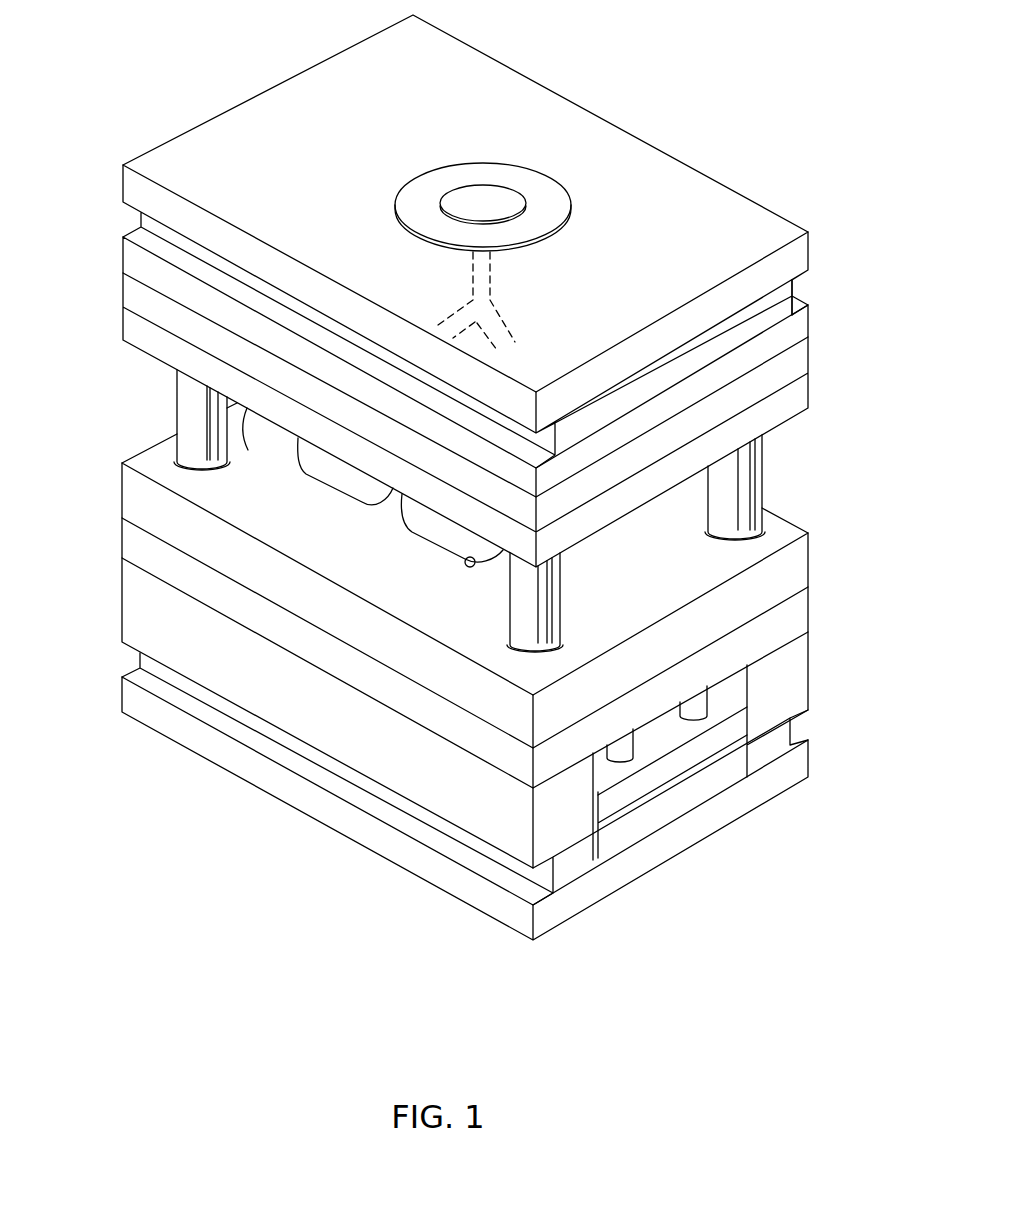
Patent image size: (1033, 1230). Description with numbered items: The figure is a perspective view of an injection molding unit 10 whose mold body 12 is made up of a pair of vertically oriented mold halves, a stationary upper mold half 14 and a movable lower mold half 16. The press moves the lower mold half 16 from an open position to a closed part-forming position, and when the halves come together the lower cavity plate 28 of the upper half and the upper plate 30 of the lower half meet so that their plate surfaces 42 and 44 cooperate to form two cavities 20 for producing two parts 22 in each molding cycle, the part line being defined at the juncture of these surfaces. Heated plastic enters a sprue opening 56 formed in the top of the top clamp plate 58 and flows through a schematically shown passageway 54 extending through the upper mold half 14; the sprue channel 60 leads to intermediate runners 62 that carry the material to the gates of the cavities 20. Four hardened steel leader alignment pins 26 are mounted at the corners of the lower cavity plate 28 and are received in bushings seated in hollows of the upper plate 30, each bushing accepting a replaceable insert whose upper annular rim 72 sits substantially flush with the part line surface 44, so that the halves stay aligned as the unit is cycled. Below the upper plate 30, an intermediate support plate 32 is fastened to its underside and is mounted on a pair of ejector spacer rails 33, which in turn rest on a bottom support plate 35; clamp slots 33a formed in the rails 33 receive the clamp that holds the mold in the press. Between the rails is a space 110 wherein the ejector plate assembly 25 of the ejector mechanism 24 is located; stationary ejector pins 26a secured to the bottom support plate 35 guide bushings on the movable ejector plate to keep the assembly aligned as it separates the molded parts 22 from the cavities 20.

The injection molding unit 10 is at (650, 55).
The mold body 12 is at (822, 176).
The upper mold half 14 is at (830, 285).
The lower mold half 16 is at (797, 600).
The cavity 20 is at (478, 568).
The part 22 is at (360, 497).
The ejector mechanism 24 is at (795, 362).
The ejector plate assembly 25 is at (680, 766).
The leader alignment pins 26 is at (185, 410).
The stationary ejector pins 26a is at (702, 716).
The lower cavity plate 28 is at (795, 398).
The upper plate 30 is at (130, 495).
The intermediate support plate 32 is at (140, 565).
The ejector spacer rails 33 is at (797, 695).
The clamp slots 33a is at (810, 738).
The bottom support plate 35 is at (588, 897).
The plate surface 42 is at (257, 442).
The plate surface 44 is at (277, 513).
The passageway 54 is at (518, 288).
The sprue opening 56 is at (492, 195).
The top clamp plate 58 is at (800, 240).
The sprue channel 60 is at (508, 262).
The runners 62 is at (503, 323).
The upper annular rim 72 is at (178, 462).
The space 110 is at (658, 810).